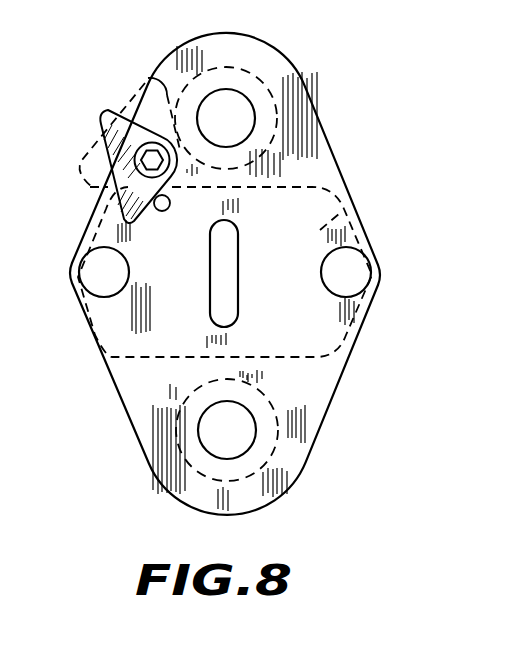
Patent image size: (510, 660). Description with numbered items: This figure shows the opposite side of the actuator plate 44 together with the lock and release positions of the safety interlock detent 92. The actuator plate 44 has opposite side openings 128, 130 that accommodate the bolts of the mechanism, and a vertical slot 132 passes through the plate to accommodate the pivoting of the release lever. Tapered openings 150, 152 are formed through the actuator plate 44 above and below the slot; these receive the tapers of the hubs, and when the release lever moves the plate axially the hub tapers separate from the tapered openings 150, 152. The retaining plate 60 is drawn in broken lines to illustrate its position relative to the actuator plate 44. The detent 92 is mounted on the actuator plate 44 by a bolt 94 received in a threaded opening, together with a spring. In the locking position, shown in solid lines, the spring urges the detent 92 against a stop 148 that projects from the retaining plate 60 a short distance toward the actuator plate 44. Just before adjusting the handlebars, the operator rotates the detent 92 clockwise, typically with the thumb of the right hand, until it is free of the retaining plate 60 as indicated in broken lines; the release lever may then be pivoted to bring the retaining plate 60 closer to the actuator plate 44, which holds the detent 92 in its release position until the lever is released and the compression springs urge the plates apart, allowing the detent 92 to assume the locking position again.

The actuator plate 44 is at (323, 160).
The retaining plate 60 is at (350, 212).
The safety interlock detent 92 is at (113, 127).
The bolt 94 is at (133, 158).
The side opening 128 is at (360, 277).
The side opening 130 is at (93, 273).
The vertical slot 132 is at (228, 300).
The stop 148 is at (163, 212).
The tapered opening 150 is at (245, 97).
The tapered opening 152 is at (250, 448).